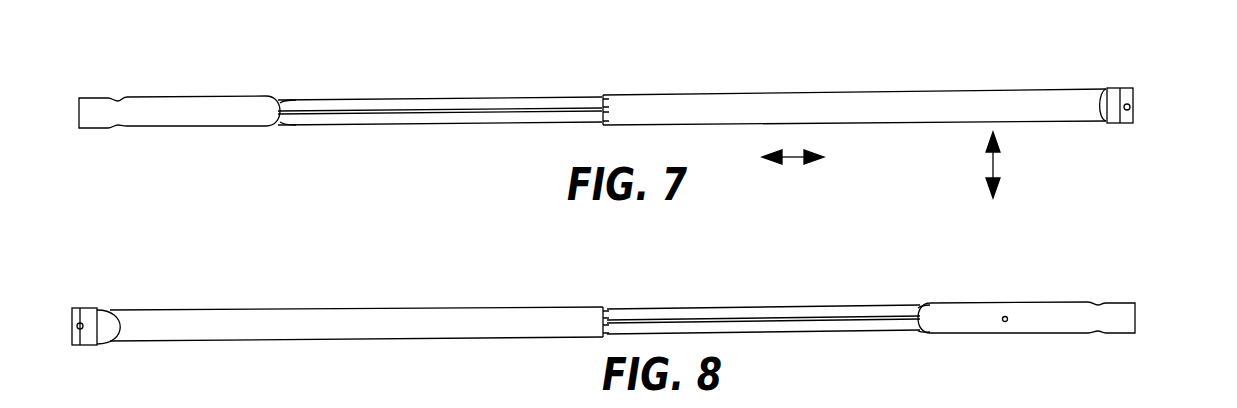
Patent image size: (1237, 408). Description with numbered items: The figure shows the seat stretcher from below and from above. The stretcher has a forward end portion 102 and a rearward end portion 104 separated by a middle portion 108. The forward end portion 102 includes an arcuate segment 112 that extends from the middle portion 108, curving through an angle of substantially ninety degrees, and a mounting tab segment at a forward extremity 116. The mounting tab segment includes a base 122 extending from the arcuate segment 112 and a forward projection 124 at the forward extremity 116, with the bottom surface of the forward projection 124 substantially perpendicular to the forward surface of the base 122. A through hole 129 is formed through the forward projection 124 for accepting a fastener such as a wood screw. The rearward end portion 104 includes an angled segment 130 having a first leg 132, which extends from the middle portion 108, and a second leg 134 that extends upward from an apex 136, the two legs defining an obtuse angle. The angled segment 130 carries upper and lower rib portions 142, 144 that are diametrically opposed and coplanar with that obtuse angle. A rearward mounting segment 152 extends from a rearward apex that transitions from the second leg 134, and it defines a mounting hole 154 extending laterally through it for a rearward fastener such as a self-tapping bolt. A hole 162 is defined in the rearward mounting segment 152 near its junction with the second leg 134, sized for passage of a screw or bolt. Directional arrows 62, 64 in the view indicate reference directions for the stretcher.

In FIG. 7, the vertical movement arrow 62 is at (991, 162).
In FIG. 7, the horizontal movement arrow 64 is at (790, 160).
In FIG. 7, the forward end portion 102 is at (898, 111).
In FIG. 8, the forward end portion 102 is at (310, 321).
In FIG. 7, the rearward end portion 104 is at (171, 106).
In FIG. 8, the rearward end portion 104 is at (1036, 317).
In FIG. 7, the middle portion 108 is at (862, 125).
In FIG. 8, the middle portion 108 is at (395, 308).
In FIG. 7, the arcuate segment 112 is at (1080, 124).
In FIG. 7, the forward extremity 116 is at (1135, 101).
In FIG. 8, the forward extremity 116 is at (72, 318).
In FIG. 8, the base 122 is at (108, 332).
In FIG. 7, the forward projection 124 is at (1128, 88).
In FIG. 8, the forward projection 124 is at (80, 308).
In FIG. 7, the through hole 129 is at (1131, 109).
In FIG. 8, the through hole 129 is at (72, 338).
In FIG. 7, the angled segment 130 is at (434, 120).
In FIG. 8, the angled segment 130 is at (768, 321).
In FIG. 7, the first leg 132 is at (267, 136).
In FIG. 8, the first leg 132 is at (690, 309).
In FIG. 7, the second leg 134 is at (365, 100).
In FIG. 8, the second leg 134 is at (835, 334).
In FIG. 7, the apex 136 is at (432, 97).
In FIG. 8, the apex 136 is at (762, 309).
In FIG. 8, the upper rib portion 142 is at (855, 318).
In FIG. 7, the lower rib portion 144 is at (517, 114).
In FIG. 7, the rearward mounting segment 152 is at (155, 126).
In FIG. 8, the rearward mounting segment 152 is at (1038, 334).
In FIG. 7, the mounting hole 154 is at (110, 128).
In FIG. 8, the mounting hole 154 is at (1097, 334).
In FIG. 8, the hole 162 is at (1005, 323).